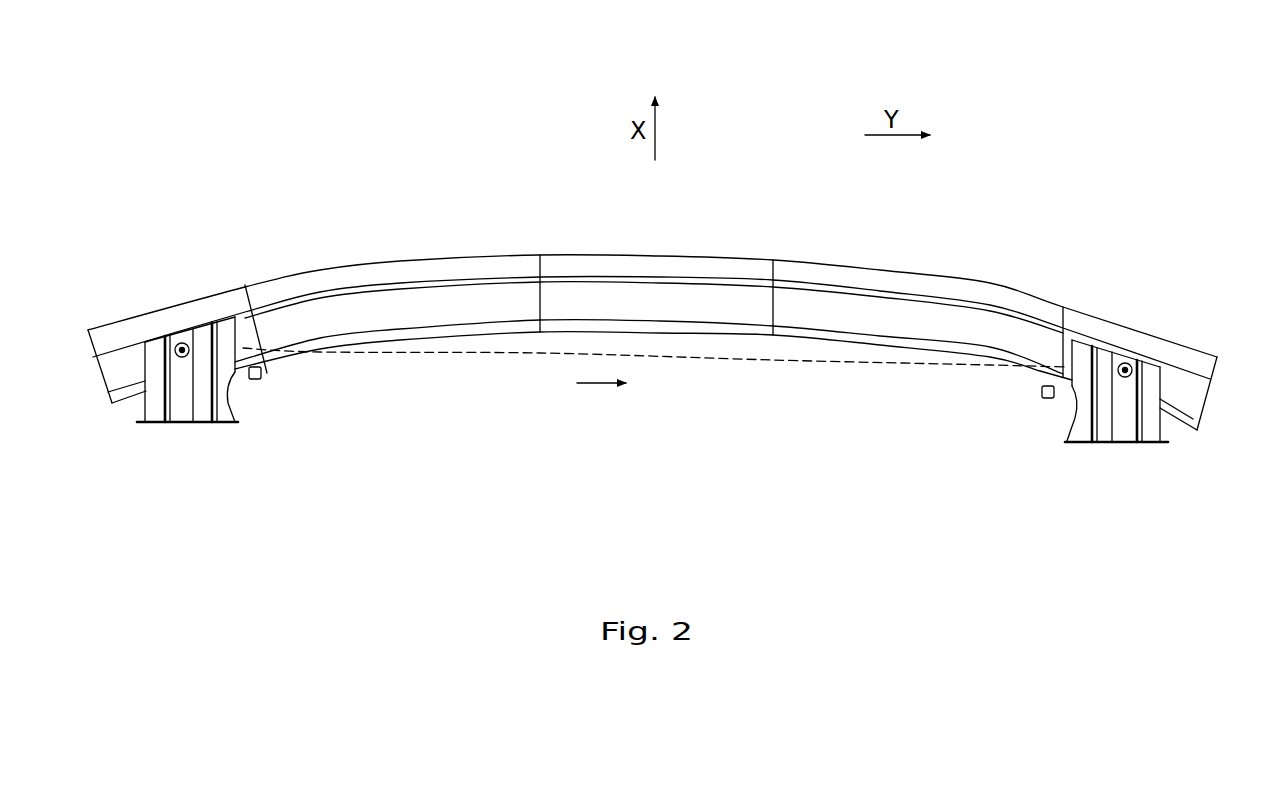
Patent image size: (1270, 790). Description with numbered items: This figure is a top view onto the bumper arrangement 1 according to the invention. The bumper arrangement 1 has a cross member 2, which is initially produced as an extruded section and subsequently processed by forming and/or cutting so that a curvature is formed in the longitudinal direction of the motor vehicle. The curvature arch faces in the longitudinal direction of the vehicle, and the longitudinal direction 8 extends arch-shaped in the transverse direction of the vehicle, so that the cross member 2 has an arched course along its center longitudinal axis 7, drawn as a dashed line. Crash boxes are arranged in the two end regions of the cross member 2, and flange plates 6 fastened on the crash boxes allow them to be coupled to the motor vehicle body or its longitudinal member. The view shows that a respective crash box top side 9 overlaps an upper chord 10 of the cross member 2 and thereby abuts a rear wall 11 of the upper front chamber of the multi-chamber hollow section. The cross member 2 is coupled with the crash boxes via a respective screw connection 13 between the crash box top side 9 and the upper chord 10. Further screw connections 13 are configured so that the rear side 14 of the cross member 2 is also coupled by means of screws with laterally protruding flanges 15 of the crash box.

The bumper arrangement 1 is at (408, 139).
The cross member 2 is at (489, 264).
The flange plates 6 is at (180, 425).
The center longitudinal axis 7 is at (770, 360).
The longitudinal direction 8 is at (595, 383).
The crash box top side 9 is at (202, 400).
The upper chord 10 is at (960, 328).
The rear wall 11 is at (292, 313).
The screw connection 13 is at (180, 344).
The rear side 14 is at (294, 369).
The laterally protruding flanges 15 is at (1067, 390).